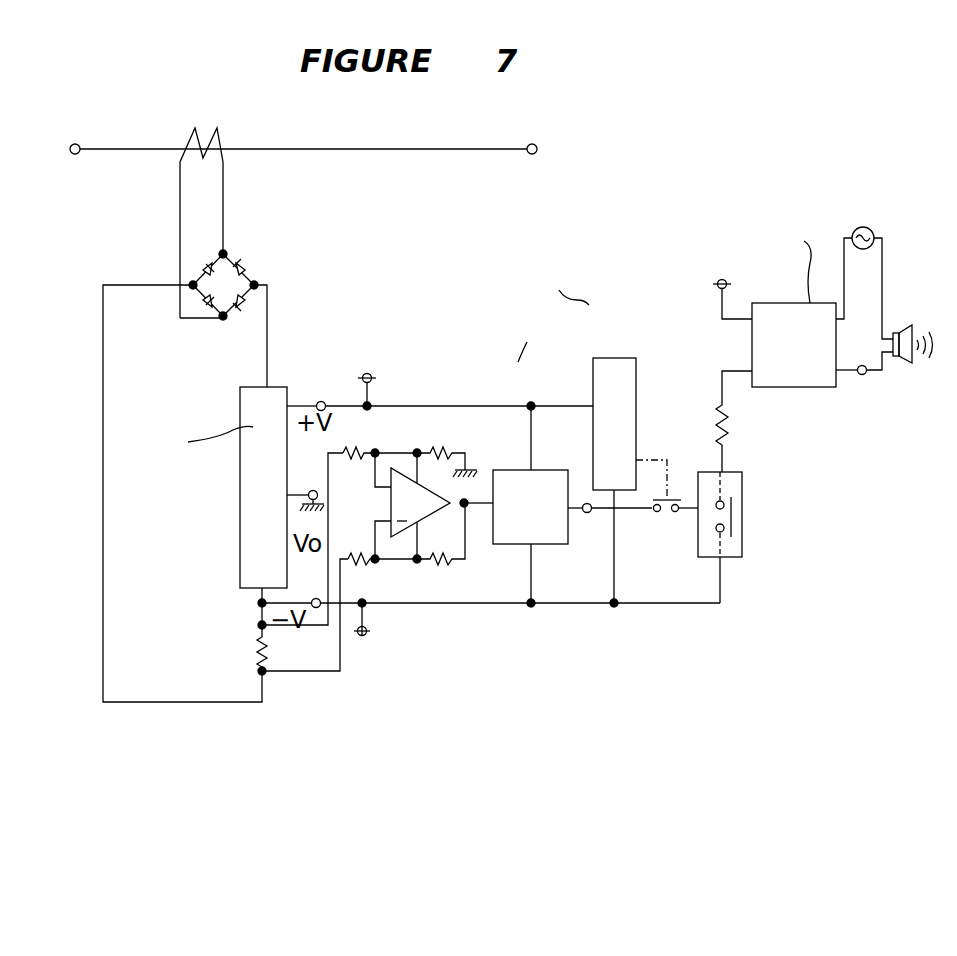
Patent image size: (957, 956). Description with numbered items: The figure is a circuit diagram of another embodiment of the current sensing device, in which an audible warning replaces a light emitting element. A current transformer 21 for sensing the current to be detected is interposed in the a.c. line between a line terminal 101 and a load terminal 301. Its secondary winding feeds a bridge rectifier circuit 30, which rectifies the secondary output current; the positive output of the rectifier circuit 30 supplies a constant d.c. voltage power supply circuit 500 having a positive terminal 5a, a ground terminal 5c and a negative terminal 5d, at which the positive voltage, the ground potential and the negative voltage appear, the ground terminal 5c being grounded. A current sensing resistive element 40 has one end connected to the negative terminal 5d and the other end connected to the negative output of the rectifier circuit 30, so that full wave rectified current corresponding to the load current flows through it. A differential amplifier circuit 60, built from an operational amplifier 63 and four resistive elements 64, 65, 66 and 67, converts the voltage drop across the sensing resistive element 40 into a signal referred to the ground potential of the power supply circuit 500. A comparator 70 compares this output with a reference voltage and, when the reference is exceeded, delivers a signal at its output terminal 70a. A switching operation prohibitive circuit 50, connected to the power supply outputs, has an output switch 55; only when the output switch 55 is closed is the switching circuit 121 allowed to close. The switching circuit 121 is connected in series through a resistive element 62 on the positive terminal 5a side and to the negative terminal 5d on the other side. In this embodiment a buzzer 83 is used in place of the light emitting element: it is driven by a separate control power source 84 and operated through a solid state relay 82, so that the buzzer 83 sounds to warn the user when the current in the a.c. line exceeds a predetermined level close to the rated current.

The load terminal 301 is at (77, 144).
The line terminal 101 is at (531, 144).
The current transformer 21 is at (215, 135).
The bridge rectifier circuit 30 is at (230, 263).
The constant d.c. voltage power supply circuit 500 is at (240, 543).
The current sensing resistive element 40 is at (258, 639).
The positive terminal 5a is at (366, 372).
The ground terminal 5c is at (318, 497).
The negative terminal 5d is at (362, 636).
The resistive element 64 is at (352, 448).
The resistive element 66 is at (442, 448).
The differential amplifier circuit 60 is at (407, 473).
The resistive element 65 is at (366, 570).
The resistive element 67 is at (431, 570).
The operational amplifier 63 is at (426, 518).
The comparator 70 is at (513, 468).
The output terminal 70a is at (586, 513).
The switching operation prohibitive circuit 50 is at (613, 358).
The output switch 55 is at (663, 512).
The switching circuit 121 is at (742, 512).
The resistive element 62 is at (729, 416).
The solid state relay 82 is at (788, 303).
The control power source 84 is at (868, 226).
The buzzer 83 is at (904, 364).